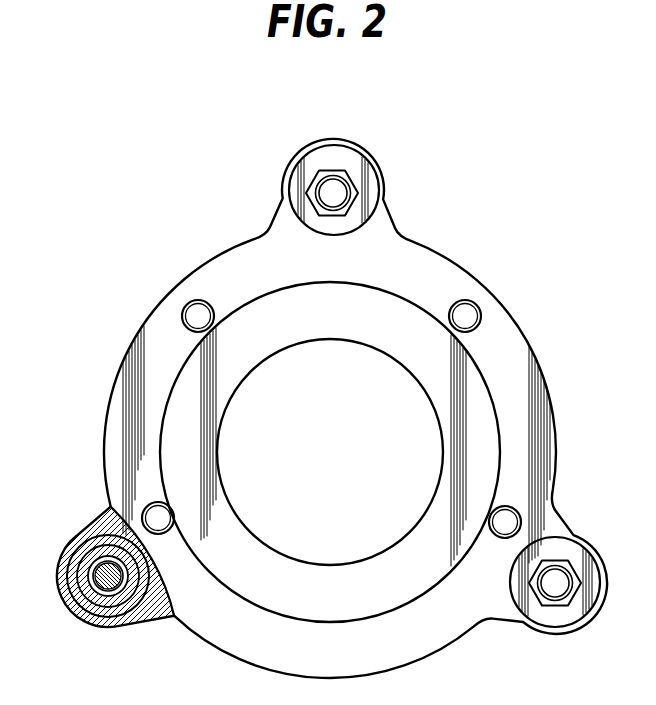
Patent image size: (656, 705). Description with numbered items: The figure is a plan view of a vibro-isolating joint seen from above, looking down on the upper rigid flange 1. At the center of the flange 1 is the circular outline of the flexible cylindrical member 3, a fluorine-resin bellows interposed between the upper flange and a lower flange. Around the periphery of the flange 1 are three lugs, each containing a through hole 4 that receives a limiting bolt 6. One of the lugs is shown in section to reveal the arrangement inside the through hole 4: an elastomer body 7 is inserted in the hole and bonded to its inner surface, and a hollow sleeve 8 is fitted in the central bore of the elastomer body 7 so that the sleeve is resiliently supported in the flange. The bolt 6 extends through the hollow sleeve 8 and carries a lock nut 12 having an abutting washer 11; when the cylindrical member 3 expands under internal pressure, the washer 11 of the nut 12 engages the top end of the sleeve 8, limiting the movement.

The upper rigid flange 1 is at (507, 331).
The flexible cylindrical member 3 is at (442, 445).
The through hole 4 is at (131, 618).
The limiting bolt 6 is at (340, 193).
The elastomer body 7 is at (89, 545).
The hollow sleeve 8 is at (83, 571).
The abutting washer 11 is at (348, 157).
The lock nut 12 is at (353, 184).